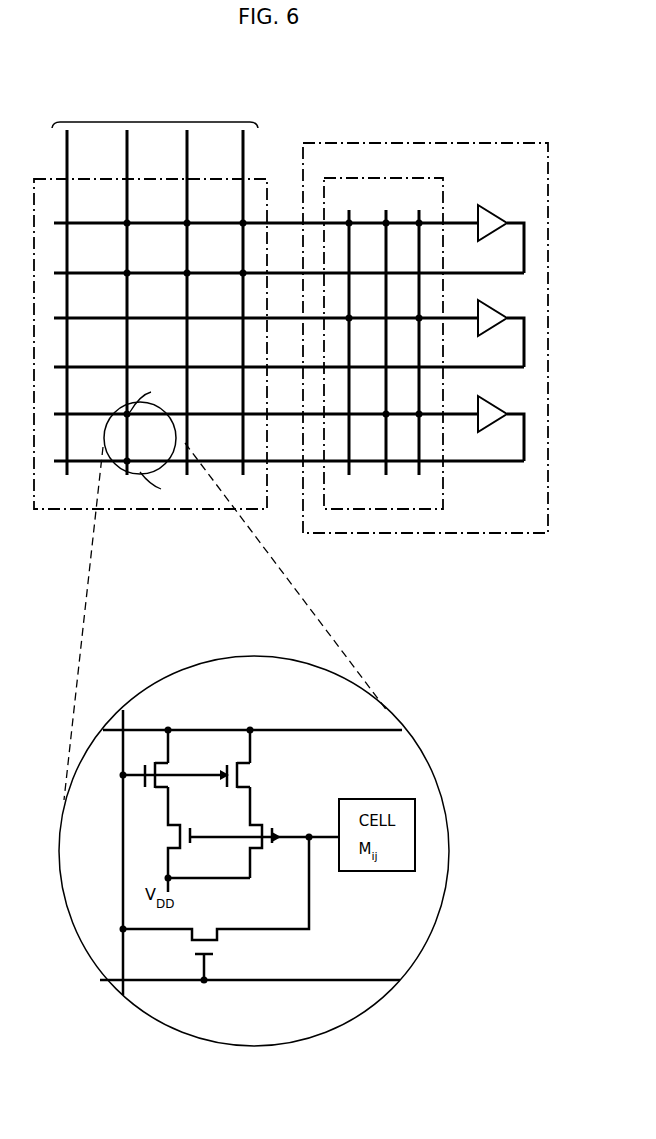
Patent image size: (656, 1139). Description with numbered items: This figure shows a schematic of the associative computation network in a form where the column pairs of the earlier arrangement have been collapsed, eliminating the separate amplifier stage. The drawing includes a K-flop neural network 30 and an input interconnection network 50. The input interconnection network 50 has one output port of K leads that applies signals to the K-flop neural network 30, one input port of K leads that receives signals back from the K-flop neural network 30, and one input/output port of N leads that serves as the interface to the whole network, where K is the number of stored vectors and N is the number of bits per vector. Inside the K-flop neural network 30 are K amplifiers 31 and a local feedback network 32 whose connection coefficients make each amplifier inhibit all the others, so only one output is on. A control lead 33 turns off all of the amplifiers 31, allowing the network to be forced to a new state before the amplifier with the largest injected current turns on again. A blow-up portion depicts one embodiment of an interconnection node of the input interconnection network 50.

The K-flop neural network 30 is at (425, 348).
The amplifier 31 is at (501, 333).
The local feedback network 32 is at (425, 495).
The control lead 33 is at (492, 198).
The input interconnection network 50 is at (138, 511).